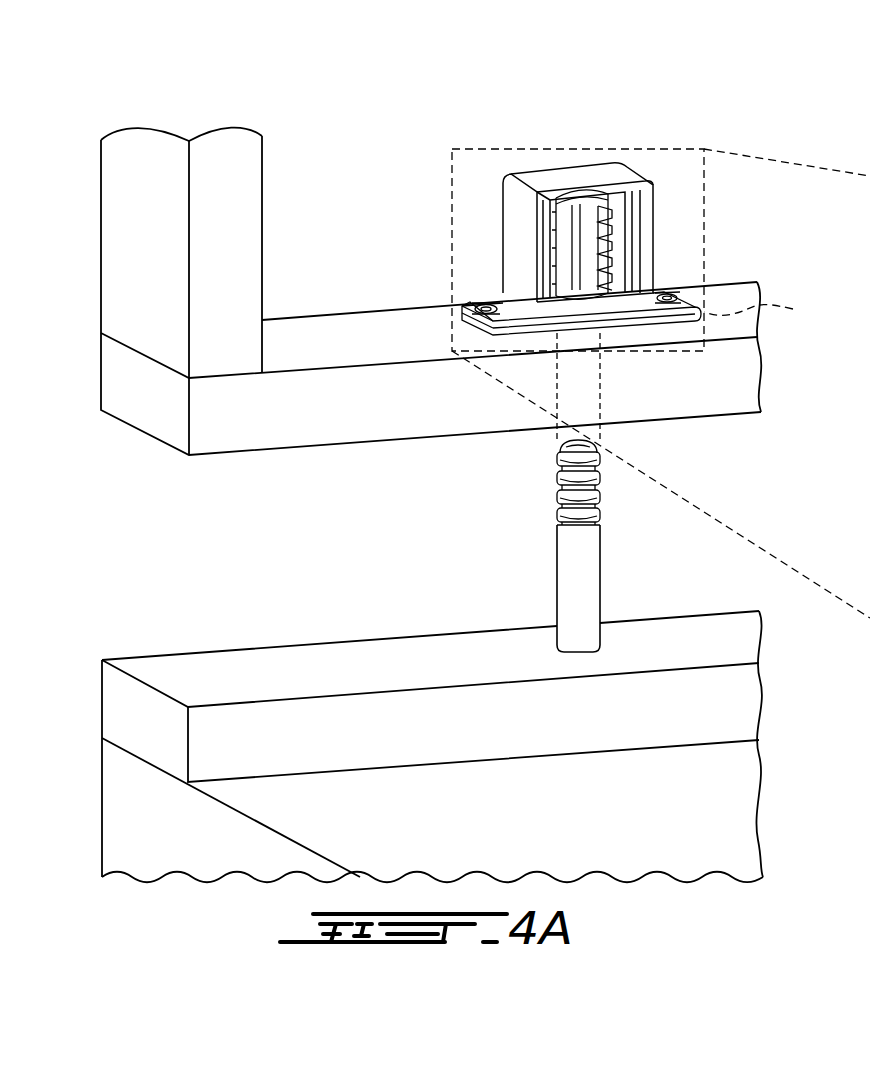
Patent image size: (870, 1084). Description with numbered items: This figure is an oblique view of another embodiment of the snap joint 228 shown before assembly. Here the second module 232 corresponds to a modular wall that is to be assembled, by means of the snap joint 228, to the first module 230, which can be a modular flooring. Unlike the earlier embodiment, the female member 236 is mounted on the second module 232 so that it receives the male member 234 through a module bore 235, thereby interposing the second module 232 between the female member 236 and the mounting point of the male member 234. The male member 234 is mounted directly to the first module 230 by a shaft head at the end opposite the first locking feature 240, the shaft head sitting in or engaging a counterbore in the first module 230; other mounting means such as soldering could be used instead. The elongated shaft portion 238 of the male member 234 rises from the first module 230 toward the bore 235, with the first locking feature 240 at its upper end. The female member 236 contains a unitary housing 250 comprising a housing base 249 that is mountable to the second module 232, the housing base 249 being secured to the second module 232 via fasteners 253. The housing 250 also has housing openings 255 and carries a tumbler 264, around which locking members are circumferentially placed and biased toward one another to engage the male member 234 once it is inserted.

The snap joint 228 is at (312, 131).
The first module 230 is at (148, 665).
The second module 232 is at (150, 388).
The male member 234 is at (573, 605).
The module bore 235 is at (577, 405).
The female member 236 is at (518, 233).
The pin shaft 238 is at (582, 557).
The first locking feature 240 is at (580, 480).
The housing base 249 is at (643, 307).
The housing 250 is at (518, 202).
The fasteners 253 is at (490, 303).
The housing openings 255 is at (590, 235).
The tumbler 264 is at (587, 202).